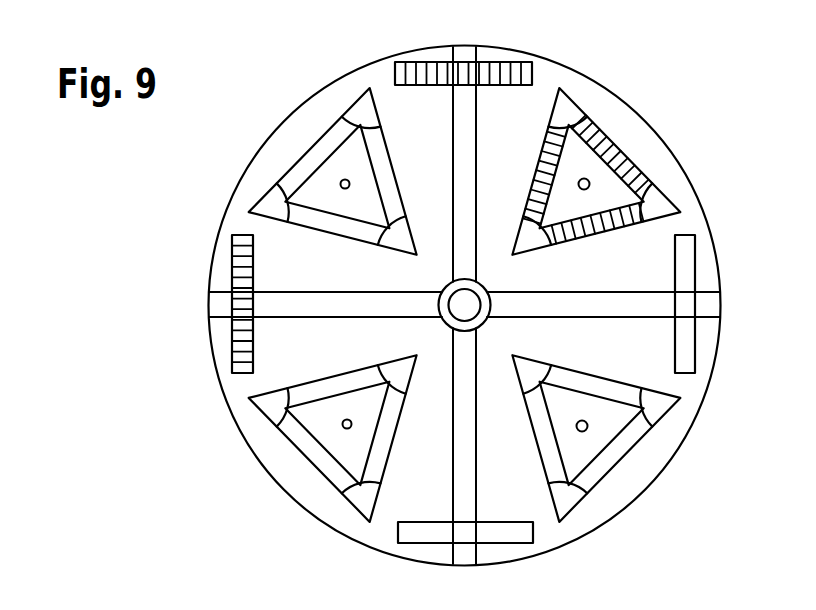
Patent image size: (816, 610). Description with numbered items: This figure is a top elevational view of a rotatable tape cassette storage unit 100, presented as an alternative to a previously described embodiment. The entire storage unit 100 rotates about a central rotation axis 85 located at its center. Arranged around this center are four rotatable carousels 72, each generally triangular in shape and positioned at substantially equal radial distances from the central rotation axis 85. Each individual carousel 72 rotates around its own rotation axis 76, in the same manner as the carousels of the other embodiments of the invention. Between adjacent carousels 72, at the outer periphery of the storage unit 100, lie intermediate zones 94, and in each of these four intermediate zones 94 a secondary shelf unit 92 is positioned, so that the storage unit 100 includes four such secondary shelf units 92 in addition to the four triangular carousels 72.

The rotatable storage unit 100 is at (158, 398).
The rotatable carousel 72 is at (318, 188).
The rotation axis 76 is at (350, 182).
The central rotation axis 85 is at (465, 308).
The secondary shelf unit 92 is at (498, 62).
The intermediate zone 94 is at (517, 130).